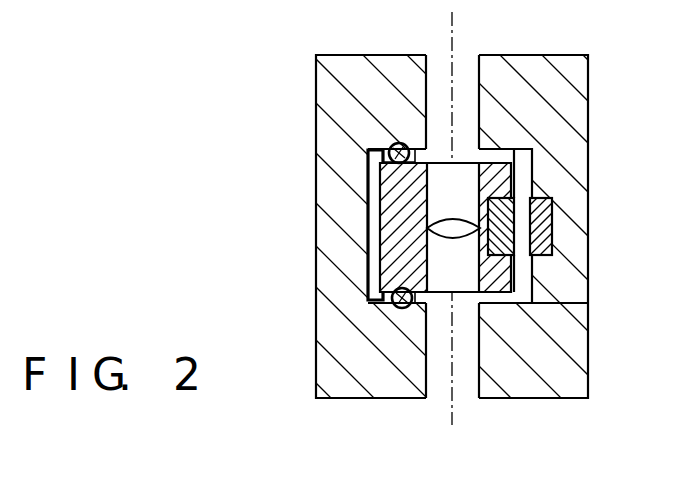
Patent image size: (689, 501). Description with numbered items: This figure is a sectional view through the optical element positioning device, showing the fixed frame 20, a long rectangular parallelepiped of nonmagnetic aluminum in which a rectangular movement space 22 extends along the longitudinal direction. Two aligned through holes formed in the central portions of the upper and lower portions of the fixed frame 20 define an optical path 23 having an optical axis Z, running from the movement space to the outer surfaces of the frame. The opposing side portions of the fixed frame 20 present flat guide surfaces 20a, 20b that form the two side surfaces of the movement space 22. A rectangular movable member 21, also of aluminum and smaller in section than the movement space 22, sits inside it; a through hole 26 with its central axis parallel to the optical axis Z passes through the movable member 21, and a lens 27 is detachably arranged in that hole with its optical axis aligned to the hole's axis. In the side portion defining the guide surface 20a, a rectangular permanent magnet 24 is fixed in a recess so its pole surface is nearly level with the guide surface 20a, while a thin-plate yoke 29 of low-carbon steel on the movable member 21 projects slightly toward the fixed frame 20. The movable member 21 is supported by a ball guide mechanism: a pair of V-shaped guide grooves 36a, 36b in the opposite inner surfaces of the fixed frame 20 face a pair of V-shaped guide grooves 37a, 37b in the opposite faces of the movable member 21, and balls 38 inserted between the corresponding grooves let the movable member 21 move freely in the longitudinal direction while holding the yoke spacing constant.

The fixed frame 20 is at (565, 382).
The guide surface 20a is at (560, 303).
The guide surface 20b is at (370, 300).
The movable member 21 is at (492, 290).
The movement space 22 is at (518, 172).
The optical path 23 is at (467, 67).
The permanent magnet 24 is at (555, 208).
The through hole 26 is at (425, 198).
The lens 27 is at (464, 224).
The thin-plate yoke 29 is at (510, 257).
The V-shaped guide groove 36a is at (392, 146).
The V-shaped guide groove 36b is at (395, 308).
The V-shaped guide groove 37a is at (368, 153).
The V-shaped guide groove 37b is at (372, 282).
The ball 38 is at (400, 143).
The optical axis Z is at (452, 212).